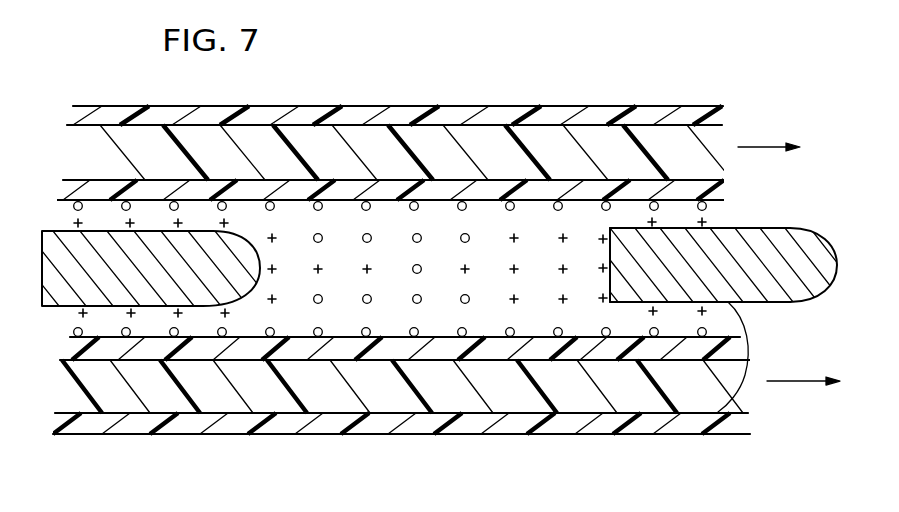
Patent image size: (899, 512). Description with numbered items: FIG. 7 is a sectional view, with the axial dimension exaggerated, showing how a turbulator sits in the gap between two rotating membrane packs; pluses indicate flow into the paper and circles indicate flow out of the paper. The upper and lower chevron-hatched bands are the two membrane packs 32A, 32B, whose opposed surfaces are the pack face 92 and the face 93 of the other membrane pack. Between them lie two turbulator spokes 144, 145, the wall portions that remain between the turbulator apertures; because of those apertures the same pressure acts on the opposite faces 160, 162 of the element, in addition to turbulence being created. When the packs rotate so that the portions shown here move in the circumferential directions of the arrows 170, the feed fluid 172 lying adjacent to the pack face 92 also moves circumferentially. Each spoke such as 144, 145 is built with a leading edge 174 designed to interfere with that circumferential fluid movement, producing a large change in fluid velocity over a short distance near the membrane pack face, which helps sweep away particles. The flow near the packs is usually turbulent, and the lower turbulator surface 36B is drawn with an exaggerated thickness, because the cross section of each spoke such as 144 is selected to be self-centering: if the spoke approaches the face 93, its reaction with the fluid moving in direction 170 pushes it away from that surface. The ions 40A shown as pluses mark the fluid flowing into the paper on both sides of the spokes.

The upper substrate plate 32A is at (513, 106).
The lower substrate plate 32B is at (463, 435).
The positive ions 40A is at (58, 212).
The pack face 92 is at (482, 200).
The face of membrane pack 93 is at (378, 337).
The feed fluid 172 is at (423, 204).
The spoke 145 is at (108, 306).
The face of the element 160 is at (745, 228).
The spoke 144 is at (782, 302).
The leading edge 174 is at (610, 279).
The electrode lower surface 36B is at (637, 318).
The face of the element 162 is at (707, 434).
The circumferential direction 170 is at (760, 147).